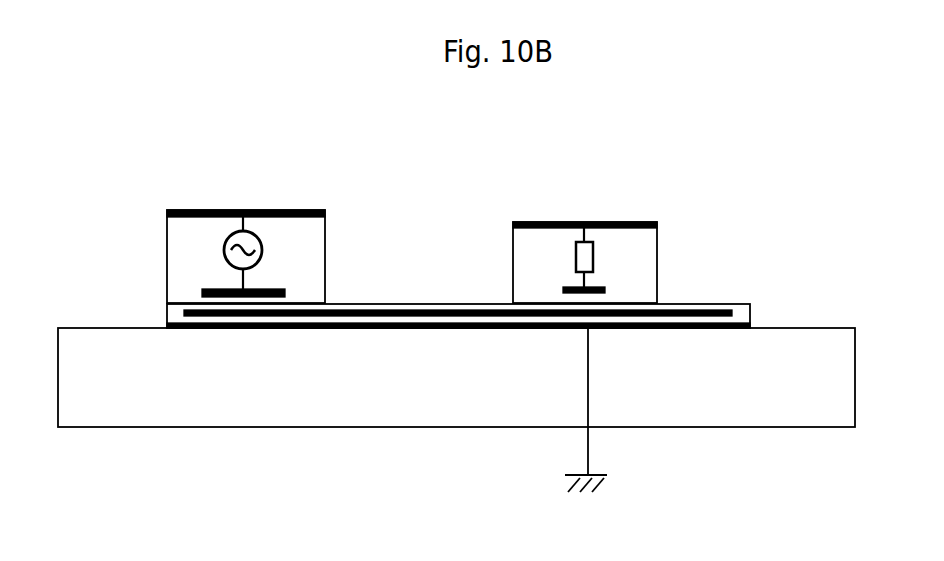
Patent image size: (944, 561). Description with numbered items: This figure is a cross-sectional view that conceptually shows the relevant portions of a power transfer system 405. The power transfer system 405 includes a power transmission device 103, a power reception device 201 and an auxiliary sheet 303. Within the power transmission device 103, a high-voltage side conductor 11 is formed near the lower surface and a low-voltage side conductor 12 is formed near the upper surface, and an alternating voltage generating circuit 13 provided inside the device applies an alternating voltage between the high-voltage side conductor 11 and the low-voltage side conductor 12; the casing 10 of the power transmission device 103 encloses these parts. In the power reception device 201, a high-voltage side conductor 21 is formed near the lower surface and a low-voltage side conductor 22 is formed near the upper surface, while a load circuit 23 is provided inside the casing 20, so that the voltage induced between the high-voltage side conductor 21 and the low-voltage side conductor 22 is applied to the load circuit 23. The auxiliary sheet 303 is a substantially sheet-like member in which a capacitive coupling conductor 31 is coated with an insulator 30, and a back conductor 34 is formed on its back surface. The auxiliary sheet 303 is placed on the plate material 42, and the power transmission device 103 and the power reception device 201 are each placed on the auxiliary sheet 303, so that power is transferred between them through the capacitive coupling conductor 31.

The power transfer system 405 is at (806, 158).
The power transmission device 103 is at (145, 237).
The first chip 10 is at (326, 254).
The high-voltage side conductor 11 is at (225, 289).
The low-voltage side conductor 12 is at (268, 210).
The alternating voltage generating circuit 13 is at (263, 252).
The power reception device 201 is at (495, 237).
The casing 20 is at (657, 246).
The high-voltage side conductor 21 is at (598, 287).
The low-voltage side conductor 22 is at (558, 222).
The load circuit 23 is at (576, 258).
The auxiliary sheet 303 is at (708, 292).
The insulator 30 is at (750, 303).
The capacitive coupling conductor 31 is at (393, 311).
The back conductor 34 is at (413, 328).
The plate material 42 is at (822, 339).